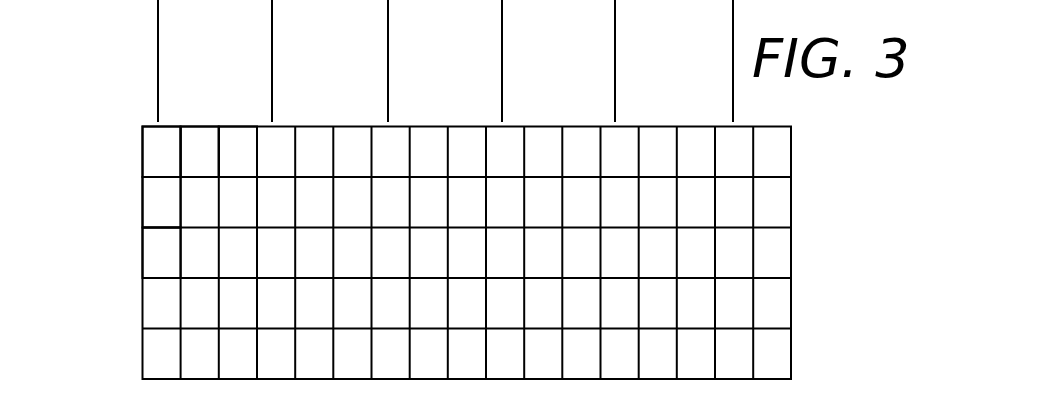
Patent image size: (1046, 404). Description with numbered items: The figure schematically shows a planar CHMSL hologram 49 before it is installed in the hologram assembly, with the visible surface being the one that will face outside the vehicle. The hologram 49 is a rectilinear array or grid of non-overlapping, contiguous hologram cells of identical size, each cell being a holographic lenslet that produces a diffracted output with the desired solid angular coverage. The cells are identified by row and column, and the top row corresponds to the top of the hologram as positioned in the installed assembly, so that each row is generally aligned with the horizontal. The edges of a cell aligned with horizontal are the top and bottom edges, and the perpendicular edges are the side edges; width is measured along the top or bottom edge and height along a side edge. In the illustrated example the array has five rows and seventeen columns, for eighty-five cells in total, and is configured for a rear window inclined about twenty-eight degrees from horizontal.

The planar CHMSL hologram 49 is at (814, 139).